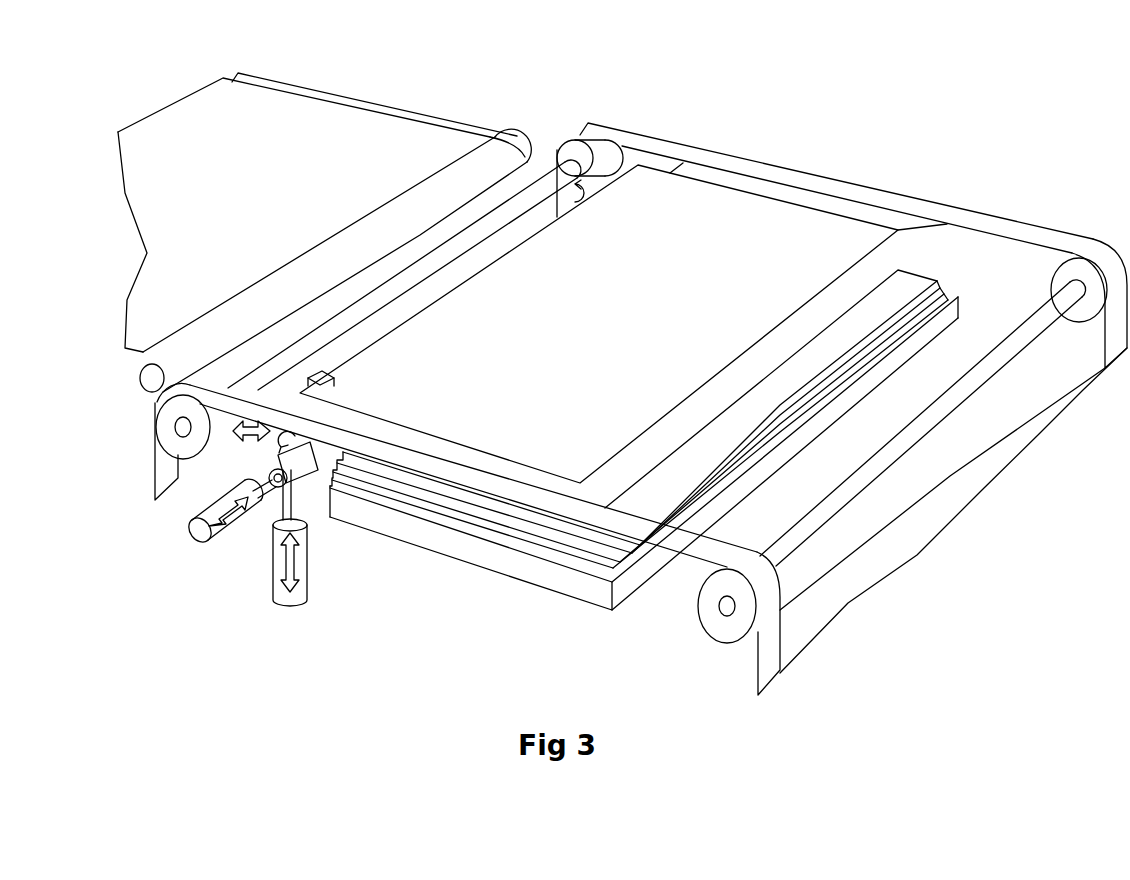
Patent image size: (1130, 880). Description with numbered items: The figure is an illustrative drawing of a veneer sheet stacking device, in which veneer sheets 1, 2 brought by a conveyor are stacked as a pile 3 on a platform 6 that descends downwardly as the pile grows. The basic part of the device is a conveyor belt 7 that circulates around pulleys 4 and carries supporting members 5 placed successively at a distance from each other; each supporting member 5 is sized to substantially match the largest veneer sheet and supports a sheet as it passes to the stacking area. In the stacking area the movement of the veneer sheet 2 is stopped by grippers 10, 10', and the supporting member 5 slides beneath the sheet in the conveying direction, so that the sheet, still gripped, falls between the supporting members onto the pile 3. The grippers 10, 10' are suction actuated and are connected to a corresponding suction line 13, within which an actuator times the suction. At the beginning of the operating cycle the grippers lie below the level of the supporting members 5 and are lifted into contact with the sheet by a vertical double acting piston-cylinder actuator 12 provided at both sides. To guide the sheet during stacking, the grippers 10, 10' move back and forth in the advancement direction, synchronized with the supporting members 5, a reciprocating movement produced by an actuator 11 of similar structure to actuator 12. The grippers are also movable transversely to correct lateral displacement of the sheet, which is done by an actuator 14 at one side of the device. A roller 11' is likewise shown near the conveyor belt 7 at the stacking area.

The veneer sheet 1 is at (195, 112).
The veneer sheet 2 is at (717, 200).
The pile 3 is at (903, 285).
The pulleys 4 is at (1070, 268).
The supporting members 5 is at (792, 193).
The platform 6 is at (495, 567).
The conveyor belt 7 is at (1015, 222).
The gripper 10 is at (286, 299).
The gripper 10' is at (575, 115).
The actuator 11 is at (179, 446).
The roller 11' is at (404, 225).
The vertical double acting piston-cylinder actuator 12 is at (287, 597).
The suction line 13 is at (313, 455).
The actuator 14 is at (200, 530).